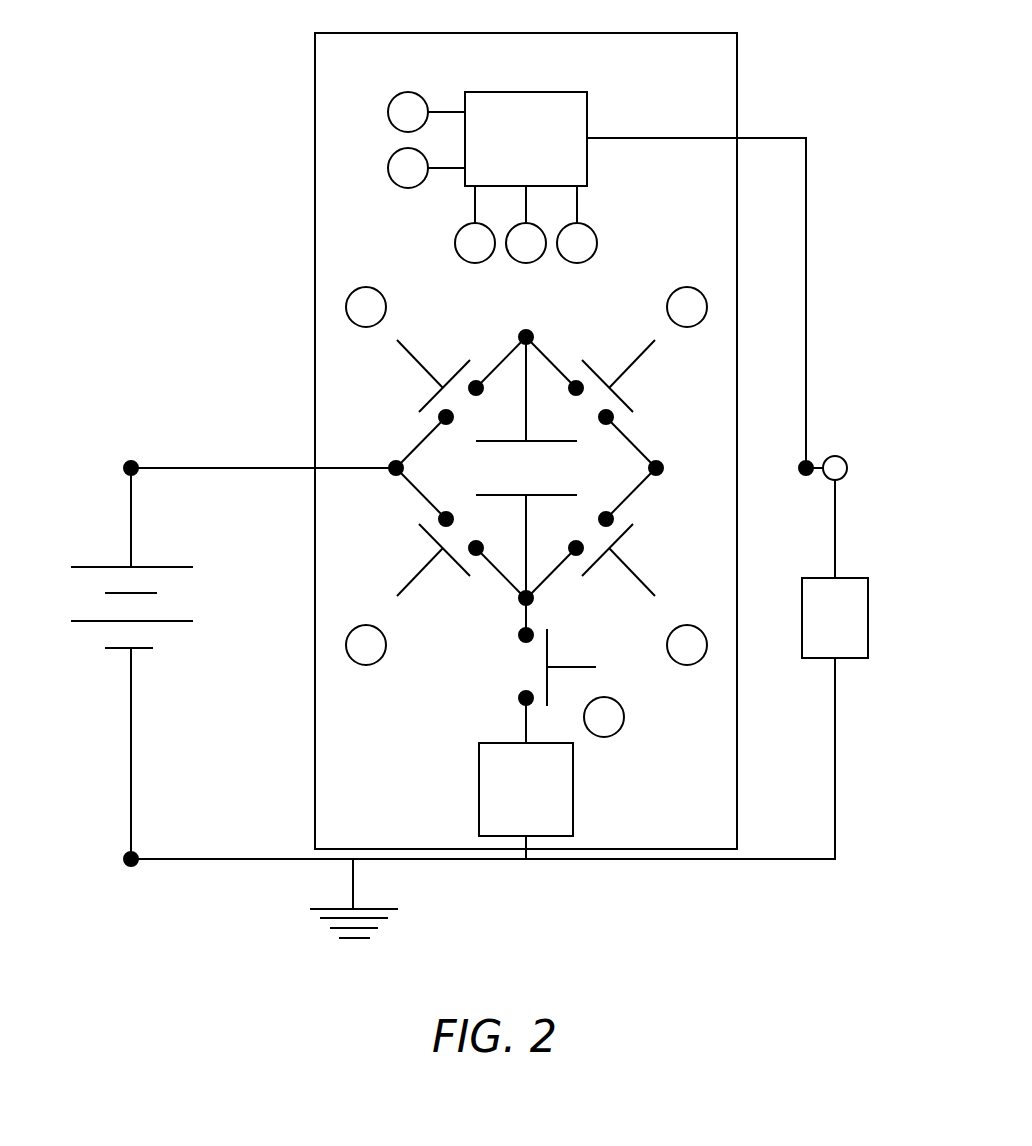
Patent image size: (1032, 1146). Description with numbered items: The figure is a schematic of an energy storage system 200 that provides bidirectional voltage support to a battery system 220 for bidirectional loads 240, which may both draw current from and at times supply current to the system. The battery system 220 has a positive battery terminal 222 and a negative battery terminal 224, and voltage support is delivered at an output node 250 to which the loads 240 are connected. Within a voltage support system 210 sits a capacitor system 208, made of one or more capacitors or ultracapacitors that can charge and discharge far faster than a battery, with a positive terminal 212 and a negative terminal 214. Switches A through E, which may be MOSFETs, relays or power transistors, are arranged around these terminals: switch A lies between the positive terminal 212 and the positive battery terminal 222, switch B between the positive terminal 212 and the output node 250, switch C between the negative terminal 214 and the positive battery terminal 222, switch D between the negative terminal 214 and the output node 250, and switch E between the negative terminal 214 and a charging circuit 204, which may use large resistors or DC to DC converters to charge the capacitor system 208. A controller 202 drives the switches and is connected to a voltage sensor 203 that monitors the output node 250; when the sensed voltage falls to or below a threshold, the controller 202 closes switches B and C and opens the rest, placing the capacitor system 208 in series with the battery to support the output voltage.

The energy storage system 200 is at (830, 196).
The controller 202 is at (575, 92).
The voltage sensor 203 is at (777, 138).
The charging circuit 204 is at (505, 743).
The capacitor system 208 is at (578, 480).
The voltage support system 210 is at (710, 33).
The positive terminal 212 is at (532, 332).
The negative terminal 214 is at (531, 604).
The battery system 220 is at (107, 548).
The positive battery terminal 222 is at (128, 462).
The negative battery terminal 224 is at (130, 866).
The bidirectional loads 240 is at (856, 578).
The output node 250 is at (840, 456).